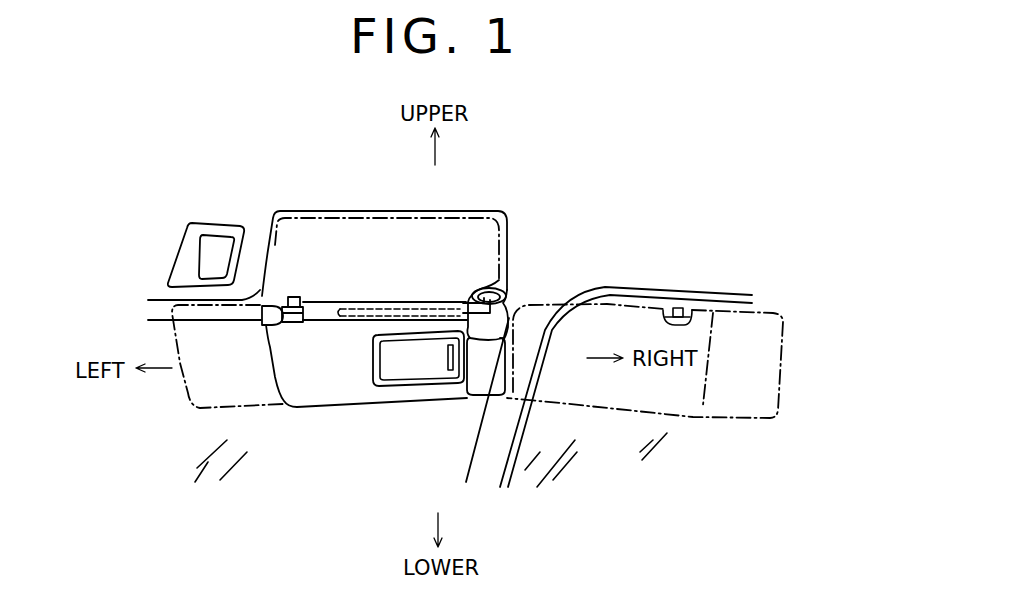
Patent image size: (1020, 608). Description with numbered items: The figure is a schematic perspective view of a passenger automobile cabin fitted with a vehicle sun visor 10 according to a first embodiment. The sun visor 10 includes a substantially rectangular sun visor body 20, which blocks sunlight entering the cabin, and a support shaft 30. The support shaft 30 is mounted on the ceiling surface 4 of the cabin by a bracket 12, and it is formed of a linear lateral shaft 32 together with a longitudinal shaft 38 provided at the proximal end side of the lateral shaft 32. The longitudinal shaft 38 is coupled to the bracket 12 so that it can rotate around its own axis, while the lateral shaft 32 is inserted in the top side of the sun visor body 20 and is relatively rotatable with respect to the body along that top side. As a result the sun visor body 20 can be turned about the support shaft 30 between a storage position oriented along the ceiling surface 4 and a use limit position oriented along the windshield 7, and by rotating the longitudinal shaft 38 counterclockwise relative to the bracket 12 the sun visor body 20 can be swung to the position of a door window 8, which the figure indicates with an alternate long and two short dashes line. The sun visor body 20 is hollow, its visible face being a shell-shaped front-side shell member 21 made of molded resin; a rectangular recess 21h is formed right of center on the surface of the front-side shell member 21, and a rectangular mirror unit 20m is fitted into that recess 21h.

The ceiling surface 4 is at (443, 240).
The windshield 7 is at (250, 432).
The window of a door 8 is at (592, 448).
The vehicle sun visor 10 is at (250, 372).
The bracket 12 is at (508, 300).
The sun visor body 20 is at (336, 383).
The mirror unit 20m is at (411, 376).
The front-side shell member 21 is at (308, 403).
The rectangular recess 21h is at (397, 365).
The support shaft 30 is at (505, 222).
The lateral shaft 32 is at (406, 302).
The longitudinal shaft 38 is at (518, 307).